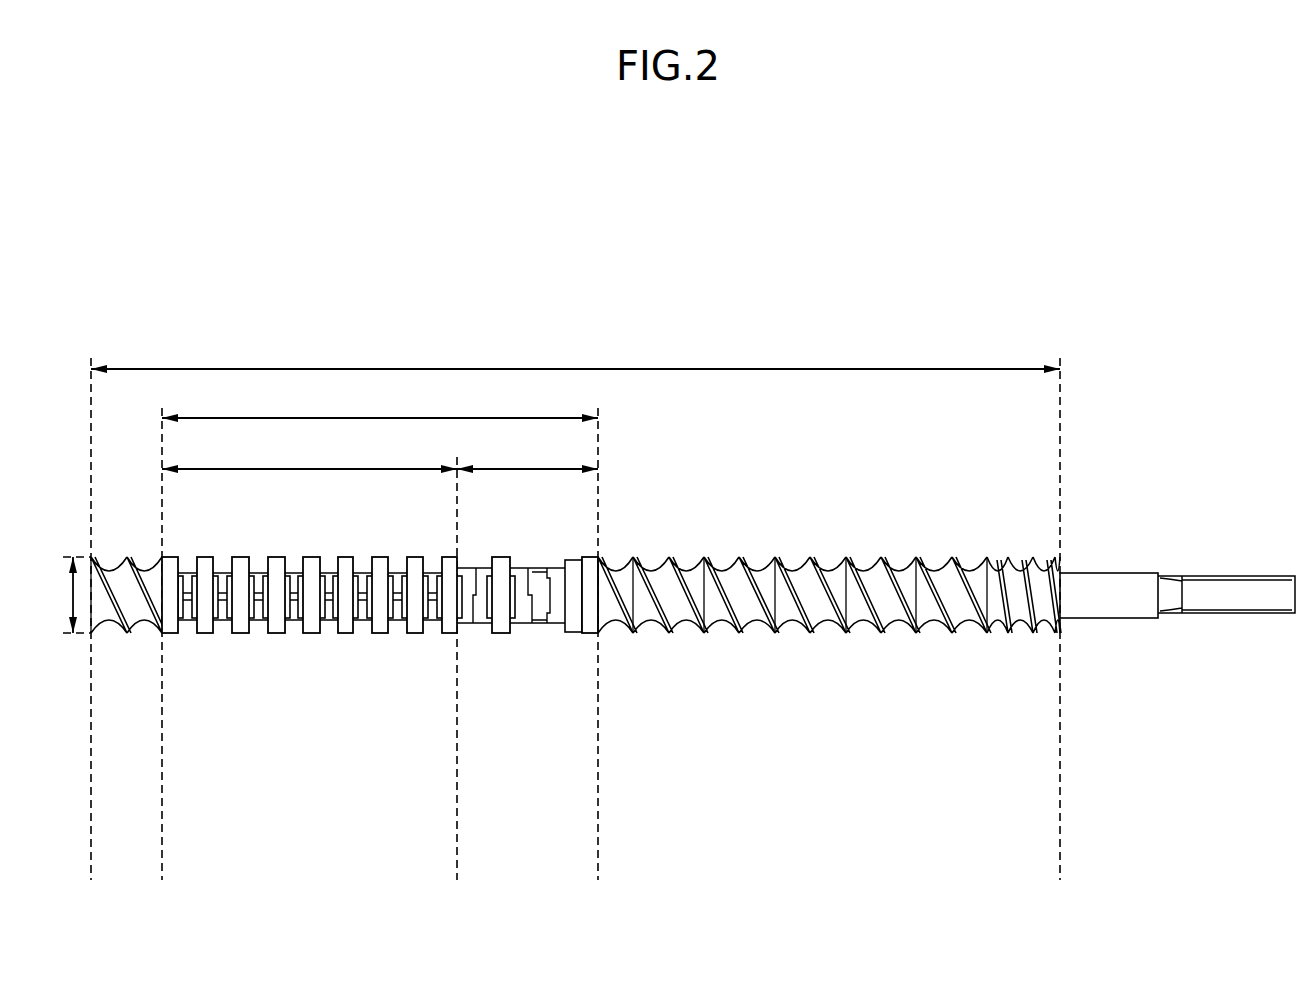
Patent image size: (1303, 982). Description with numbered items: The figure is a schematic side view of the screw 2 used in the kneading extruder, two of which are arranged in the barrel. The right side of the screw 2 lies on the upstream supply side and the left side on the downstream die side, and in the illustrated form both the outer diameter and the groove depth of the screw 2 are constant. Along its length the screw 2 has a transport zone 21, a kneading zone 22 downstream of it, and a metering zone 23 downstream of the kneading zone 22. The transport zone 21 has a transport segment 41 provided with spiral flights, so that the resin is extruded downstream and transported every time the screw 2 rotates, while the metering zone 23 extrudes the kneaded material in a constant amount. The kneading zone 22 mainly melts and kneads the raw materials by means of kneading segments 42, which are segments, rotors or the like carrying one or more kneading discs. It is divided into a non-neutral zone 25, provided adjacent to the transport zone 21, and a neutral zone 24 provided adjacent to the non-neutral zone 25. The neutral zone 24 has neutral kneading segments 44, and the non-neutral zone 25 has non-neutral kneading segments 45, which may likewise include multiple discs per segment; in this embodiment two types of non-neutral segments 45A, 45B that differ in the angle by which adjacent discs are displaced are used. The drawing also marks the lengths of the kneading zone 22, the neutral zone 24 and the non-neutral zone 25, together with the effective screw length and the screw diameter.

The screw 2 is at (1134, 277).
The transport zone 21 is at (946, 713).
The kneading zone 22 is at (387, 713).
The metering zone 23 is at (162, 869).
The neutral zone 24 is at (312, 688).
The non-neutral zone 25 is at (529, 688).
The transport segment 41 is at (829, 628).
The kneading segment 42 is at (312, 643).
The neutral kneading segment 44 is at (320, 645).
The non-neutral kneading segment 45 is at (529, 669).
The first non-neutral segment 45A is at (530, 645).
The second non-neutral segment 45B is at (462, 645).